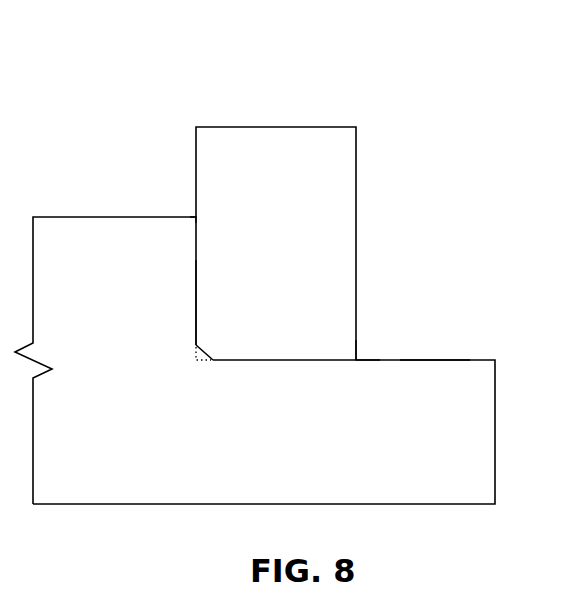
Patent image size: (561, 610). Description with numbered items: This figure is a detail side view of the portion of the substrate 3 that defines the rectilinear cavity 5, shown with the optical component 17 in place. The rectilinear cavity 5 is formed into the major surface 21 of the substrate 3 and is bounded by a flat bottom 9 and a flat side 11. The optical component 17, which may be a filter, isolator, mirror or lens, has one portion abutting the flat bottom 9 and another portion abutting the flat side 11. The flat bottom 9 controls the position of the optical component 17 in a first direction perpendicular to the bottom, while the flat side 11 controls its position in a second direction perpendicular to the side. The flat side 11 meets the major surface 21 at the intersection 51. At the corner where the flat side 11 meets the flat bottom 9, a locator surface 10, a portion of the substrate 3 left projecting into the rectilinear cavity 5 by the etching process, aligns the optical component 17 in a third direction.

The substrate 3 is at (123, 474).
The rectilinear cavity 5 is at (387, 312).
The flat bottom 9 is at (432, 360).
The locator surface 10 is at (211, 355).
The flat side 11 is at (196, 282).
The optical component 17 is at (277, 127).
The major surface 21 is at (115, 217).
The intersection 51 is at (196, 217).